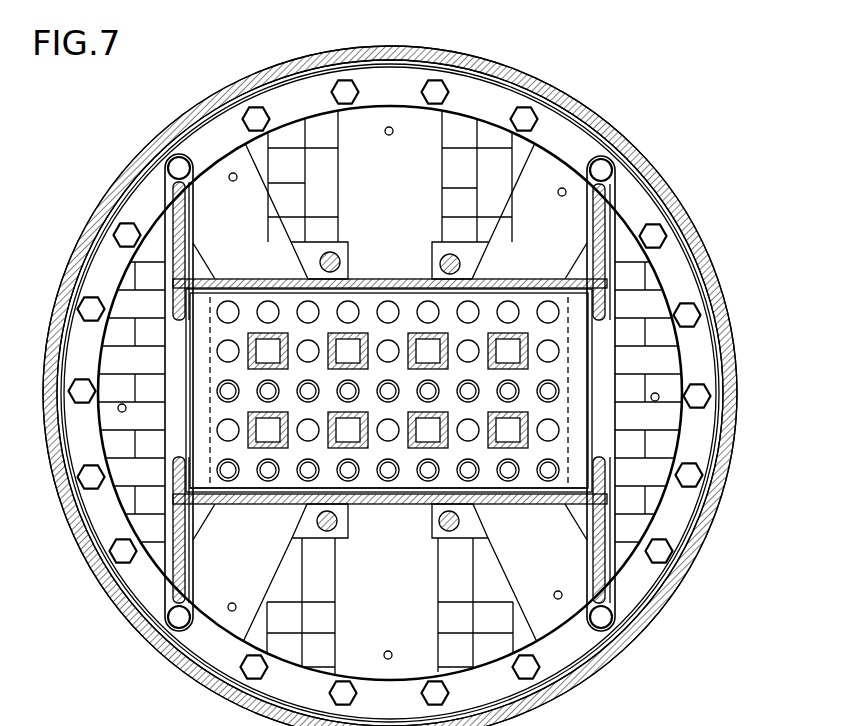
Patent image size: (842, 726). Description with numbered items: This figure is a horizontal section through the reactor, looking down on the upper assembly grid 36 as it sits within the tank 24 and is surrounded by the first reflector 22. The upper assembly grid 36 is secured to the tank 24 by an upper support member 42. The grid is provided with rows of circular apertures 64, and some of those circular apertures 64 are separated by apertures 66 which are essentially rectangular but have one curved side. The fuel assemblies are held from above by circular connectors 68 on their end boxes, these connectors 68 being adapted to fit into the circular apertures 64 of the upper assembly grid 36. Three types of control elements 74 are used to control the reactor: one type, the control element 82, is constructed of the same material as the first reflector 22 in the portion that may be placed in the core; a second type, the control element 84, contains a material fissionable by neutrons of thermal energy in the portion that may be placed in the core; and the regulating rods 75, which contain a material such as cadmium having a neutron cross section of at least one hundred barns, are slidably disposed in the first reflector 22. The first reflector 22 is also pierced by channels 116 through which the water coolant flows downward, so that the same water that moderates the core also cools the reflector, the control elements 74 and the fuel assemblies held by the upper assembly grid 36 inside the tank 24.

The first reflector 22 is at (412, 173).
The tank 24 is at (660, 193).
The upper assembly grid 36 is at (247, 486).
The upper support member 42 is at (181, 216).
The circular apertures 64 is at (389, 305).
The apertures 66 is at (525, 337).
The circular connectors 68 is at (215, 463).
The control elements 74 is at (399, 505).
The regulating rods 75 is at (320, 262).
The control element 82 is at (494, 333).
The control element 84 is at (280, 500).
The channels 116 is at (393, 131).